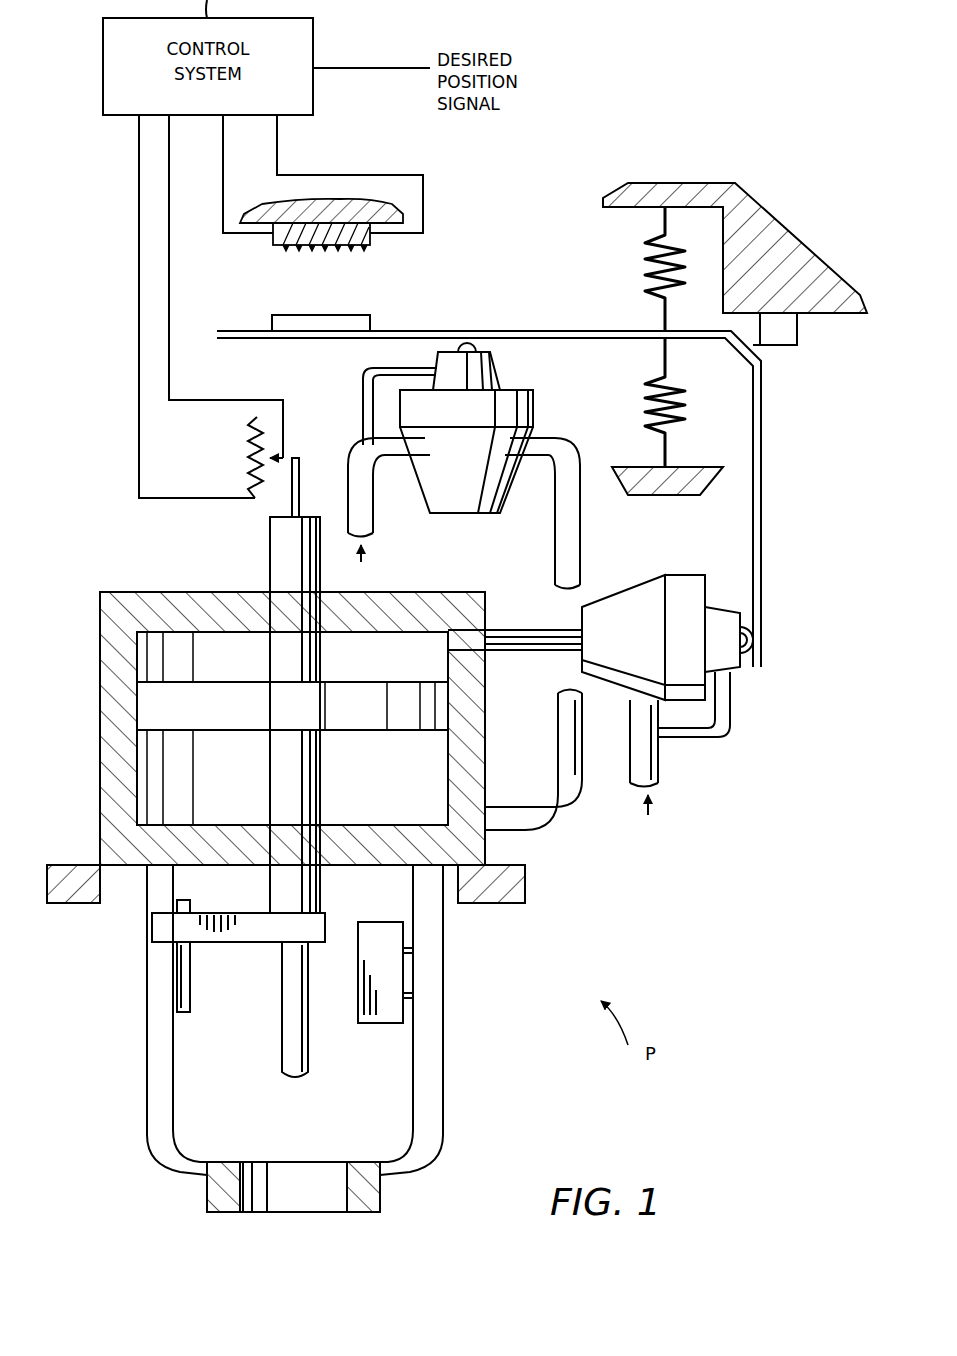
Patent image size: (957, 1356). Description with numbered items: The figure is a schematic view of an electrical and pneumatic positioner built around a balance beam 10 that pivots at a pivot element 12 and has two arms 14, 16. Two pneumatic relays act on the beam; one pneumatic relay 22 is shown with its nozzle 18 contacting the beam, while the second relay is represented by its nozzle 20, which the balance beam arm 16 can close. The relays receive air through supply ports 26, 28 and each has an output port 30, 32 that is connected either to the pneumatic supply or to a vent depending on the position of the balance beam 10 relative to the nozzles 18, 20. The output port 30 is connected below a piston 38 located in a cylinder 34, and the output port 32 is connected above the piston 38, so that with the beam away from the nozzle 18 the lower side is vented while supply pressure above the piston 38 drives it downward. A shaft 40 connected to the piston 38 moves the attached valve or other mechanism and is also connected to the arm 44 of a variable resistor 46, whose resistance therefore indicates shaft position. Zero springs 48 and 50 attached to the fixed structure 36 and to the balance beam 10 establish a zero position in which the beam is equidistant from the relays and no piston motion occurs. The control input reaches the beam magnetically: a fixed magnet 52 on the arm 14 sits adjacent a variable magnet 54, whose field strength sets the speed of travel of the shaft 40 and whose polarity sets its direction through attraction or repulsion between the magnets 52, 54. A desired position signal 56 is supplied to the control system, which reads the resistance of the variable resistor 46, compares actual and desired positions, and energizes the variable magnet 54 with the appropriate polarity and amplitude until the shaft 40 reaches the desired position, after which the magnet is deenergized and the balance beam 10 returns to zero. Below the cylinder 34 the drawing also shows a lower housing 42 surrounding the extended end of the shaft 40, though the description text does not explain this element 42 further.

The balance beam 10 is at (440, 329).
The pivot element 12 is at (792, 350).
The arm 14 is at (405, 327).
The arm 16 is at (762, 517).
The nozzle 18 is at (478, 343).
The nozzle 20 is at (750, 658).
The pneumatic relay 22 is at (546, 400).
The supply port 26 is at (373, 509).
The supply port 28 is at (660, 768).
The output port 30 is at (545, 830).
The output port 32 is at (545, 626).
The cylinder 34 is at (145, 786).
The fixed structure 36 is at (790, 250).
The piston 38 is at (145, 703).
The shaft 40 is at (268, 568).
The cup housing 42 is at (185, 1182).
The arm 44 is at (286, 456).
The variable resistor 46 is at (252, 432).
The zero spring 48 is at (645, 262).
The zero spring 50 is at (645, 400).
The fixed magnet 52 is at (280, 310).
The variable magnet 54 is at (360, 243).
The desired position signal 56 is at (380, 68).